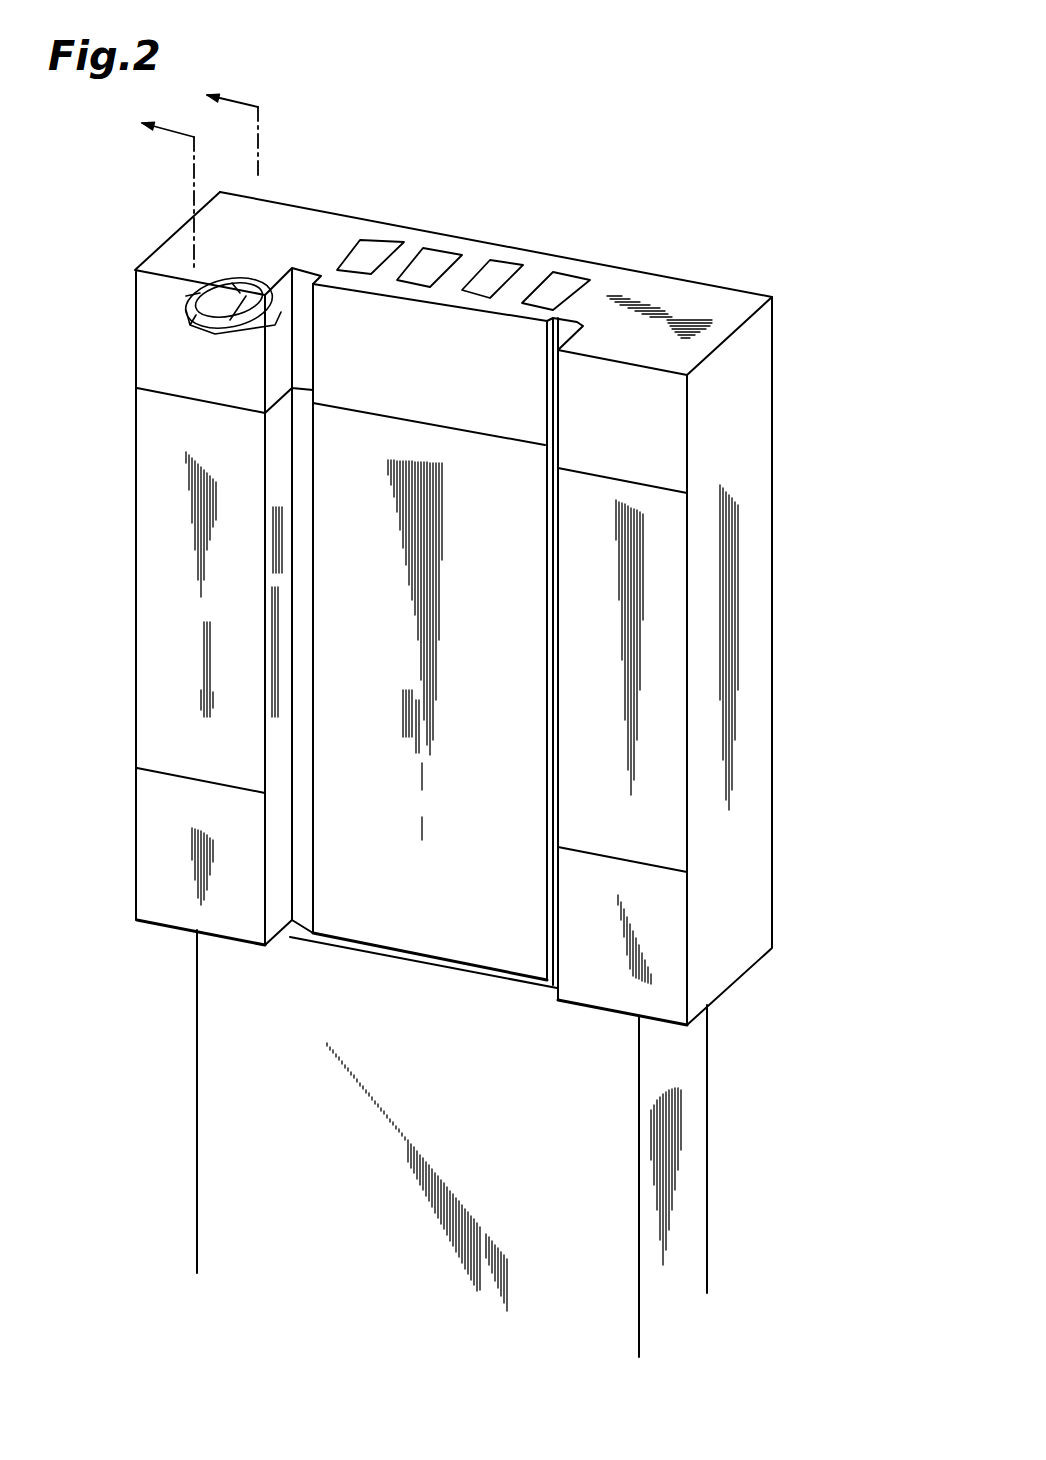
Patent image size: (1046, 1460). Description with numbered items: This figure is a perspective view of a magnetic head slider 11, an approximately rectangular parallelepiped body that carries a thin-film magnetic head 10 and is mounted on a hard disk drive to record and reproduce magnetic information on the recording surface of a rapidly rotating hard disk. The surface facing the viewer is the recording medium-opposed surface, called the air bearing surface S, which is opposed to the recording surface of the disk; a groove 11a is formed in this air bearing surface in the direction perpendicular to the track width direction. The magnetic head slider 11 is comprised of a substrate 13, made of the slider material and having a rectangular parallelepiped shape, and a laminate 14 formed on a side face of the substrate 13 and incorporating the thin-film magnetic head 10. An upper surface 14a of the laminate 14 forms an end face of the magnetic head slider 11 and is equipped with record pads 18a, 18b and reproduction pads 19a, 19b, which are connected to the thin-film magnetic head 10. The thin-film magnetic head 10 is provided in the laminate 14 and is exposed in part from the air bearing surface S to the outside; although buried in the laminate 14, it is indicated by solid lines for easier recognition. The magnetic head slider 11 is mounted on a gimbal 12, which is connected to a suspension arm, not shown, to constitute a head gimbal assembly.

The thin-film magnetic head 10 is at (183, 248).
The magnetic head slider 11 is at (558, 551).
The groove 11a is at (455, 343).
The gimbal 12 is at (680, 1075).
The substrate 13 is at (703, 631).
The laminate 14 is at (703, 306).
The upper surface of the laminate 14a is at (690, 312).
The record pad 18a is at (372, 262).
The record pad 18b is at (560, 293).
The reproduction pad 19a is at (437, 272).
The reproduction pad 19b is at (498, 286).
The air bearing surface S is at (153, 543).